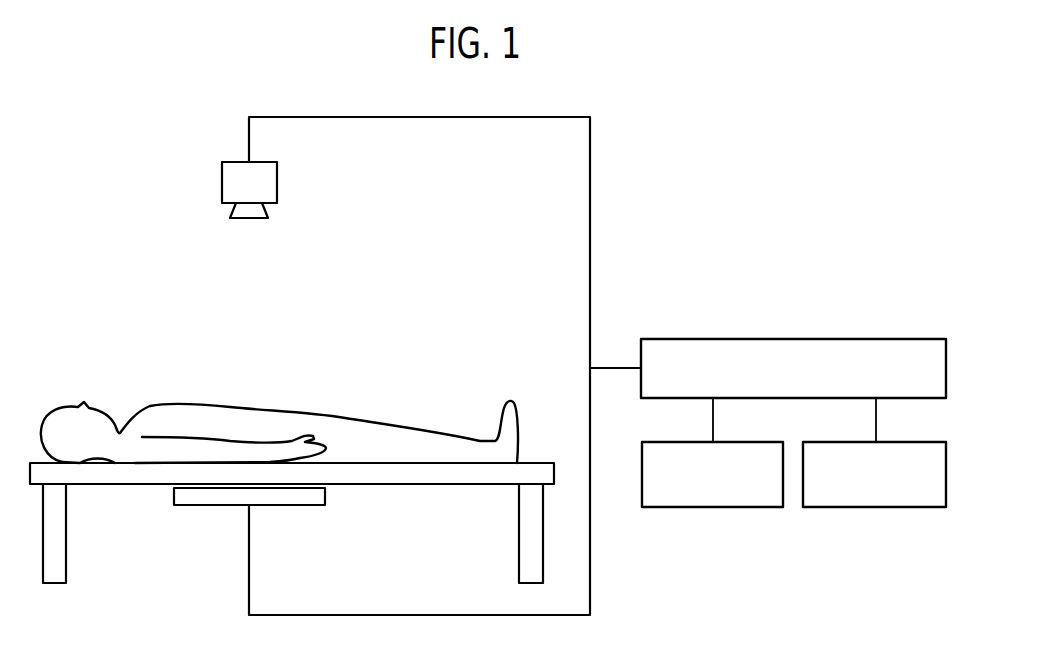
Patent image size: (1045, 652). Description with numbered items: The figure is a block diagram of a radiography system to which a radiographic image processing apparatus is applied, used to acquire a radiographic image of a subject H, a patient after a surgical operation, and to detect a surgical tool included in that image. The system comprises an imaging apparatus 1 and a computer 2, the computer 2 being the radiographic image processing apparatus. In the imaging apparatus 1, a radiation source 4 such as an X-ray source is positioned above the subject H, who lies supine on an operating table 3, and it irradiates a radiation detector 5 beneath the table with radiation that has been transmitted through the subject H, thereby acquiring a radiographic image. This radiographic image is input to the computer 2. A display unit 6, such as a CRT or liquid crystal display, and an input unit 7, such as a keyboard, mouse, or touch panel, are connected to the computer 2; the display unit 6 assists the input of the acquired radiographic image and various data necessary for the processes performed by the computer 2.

The imaging apparatus 1 is at (140, 171).
The computer 2 is at (913, 339).
The operating table 3 is at (66, 535).
The radiation source 4 is at (277, 180).
The radiation detector 5 is at (305, 507).
The display unit 6 is at (750, 507).
The input unit 7 is at (913, 507).
The subject H is at (65, 411).